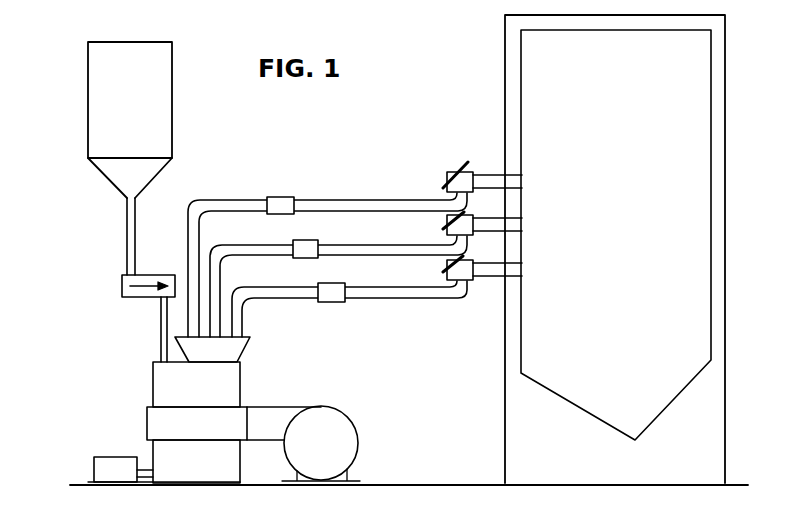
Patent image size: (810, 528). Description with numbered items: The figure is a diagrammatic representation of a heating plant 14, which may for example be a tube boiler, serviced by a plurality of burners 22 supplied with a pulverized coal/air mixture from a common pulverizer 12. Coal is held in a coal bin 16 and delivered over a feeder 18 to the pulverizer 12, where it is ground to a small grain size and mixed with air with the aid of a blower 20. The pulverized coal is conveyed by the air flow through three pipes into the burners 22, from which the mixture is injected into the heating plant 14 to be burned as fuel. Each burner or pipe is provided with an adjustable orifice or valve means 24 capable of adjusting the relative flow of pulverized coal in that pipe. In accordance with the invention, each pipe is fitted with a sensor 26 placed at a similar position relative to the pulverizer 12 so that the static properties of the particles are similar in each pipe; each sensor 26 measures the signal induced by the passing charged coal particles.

The pulverizer 12 is at (232, 394).
The heating plant 14 is at (497, 83).
The coal bin 16 is at (98, 136).
The feeder 18 is at (133, 299).
The blower 20 is at (352, 435).
The burners 22 is at (522, 262).
The adjustable orifice or valve means 24 is at (447, 215).
The sensor 26 is at (306, 246).